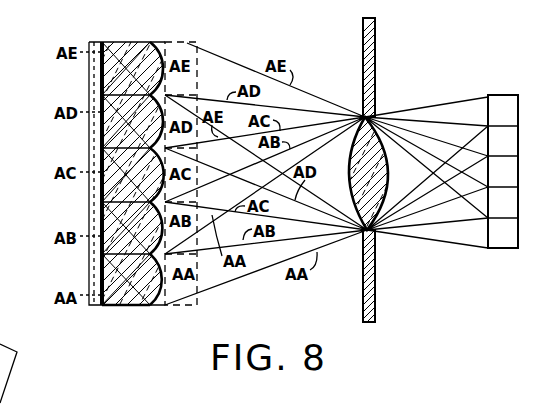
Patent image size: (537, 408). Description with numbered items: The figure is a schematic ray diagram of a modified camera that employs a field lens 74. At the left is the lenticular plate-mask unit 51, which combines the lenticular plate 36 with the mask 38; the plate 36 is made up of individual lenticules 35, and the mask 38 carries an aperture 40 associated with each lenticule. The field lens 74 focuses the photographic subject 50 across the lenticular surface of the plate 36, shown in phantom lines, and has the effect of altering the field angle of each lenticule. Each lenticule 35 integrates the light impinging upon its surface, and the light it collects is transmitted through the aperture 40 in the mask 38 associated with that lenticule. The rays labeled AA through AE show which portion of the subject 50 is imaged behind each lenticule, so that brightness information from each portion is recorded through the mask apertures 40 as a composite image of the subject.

The lenticule 35 is at (177, 156).
The lenticular plate 36 is at (196, 43).
The mask 38 is at (100, 84).
The aperture 40 is at (100, 151).
The photographic subject 50 is at (505, 95).
The lenticular plate-mask unit 51 is at (194, 39).
The field lens 74 is at (378, 167).